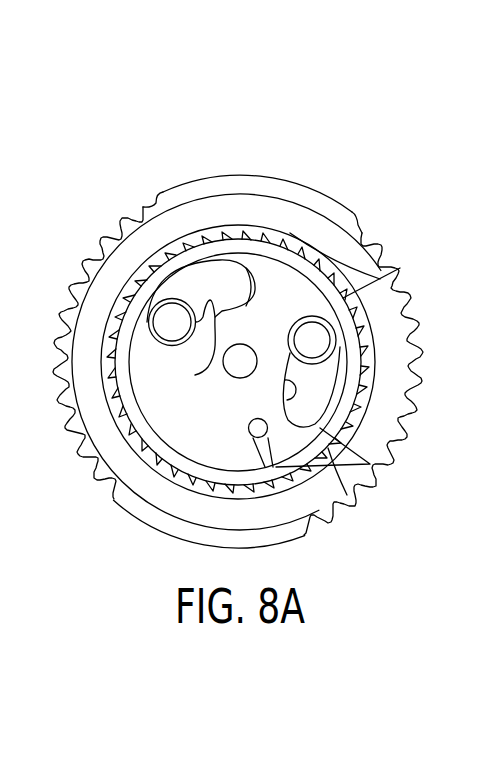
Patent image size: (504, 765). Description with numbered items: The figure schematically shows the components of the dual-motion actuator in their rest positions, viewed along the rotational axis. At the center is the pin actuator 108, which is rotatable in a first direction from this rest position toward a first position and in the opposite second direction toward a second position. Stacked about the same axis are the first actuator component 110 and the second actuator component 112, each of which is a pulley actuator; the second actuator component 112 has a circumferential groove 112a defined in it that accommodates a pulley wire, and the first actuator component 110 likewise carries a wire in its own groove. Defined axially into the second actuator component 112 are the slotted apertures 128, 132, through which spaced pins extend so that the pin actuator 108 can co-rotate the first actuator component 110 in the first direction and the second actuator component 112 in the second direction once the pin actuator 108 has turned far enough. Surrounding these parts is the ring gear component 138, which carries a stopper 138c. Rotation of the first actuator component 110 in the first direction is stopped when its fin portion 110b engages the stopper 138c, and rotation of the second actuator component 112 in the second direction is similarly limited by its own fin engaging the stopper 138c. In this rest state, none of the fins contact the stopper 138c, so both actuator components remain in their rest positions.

The pin actuator 108 is at (178, 257).
The first actuator component 110 is at (300, 464).
The fin portion 110b is at (350, 497).
The second actuator component 112 is at (321, 290).
The circumferential groove 112a is at (359, 280).
The second actuator slotted first aperture 128 is at (197, 375).
The second actuator slotted second aperture 132 is at (284, 399).
The ring gear component 138 is at (223, 188).
The stopper 138c is at (416, 351).